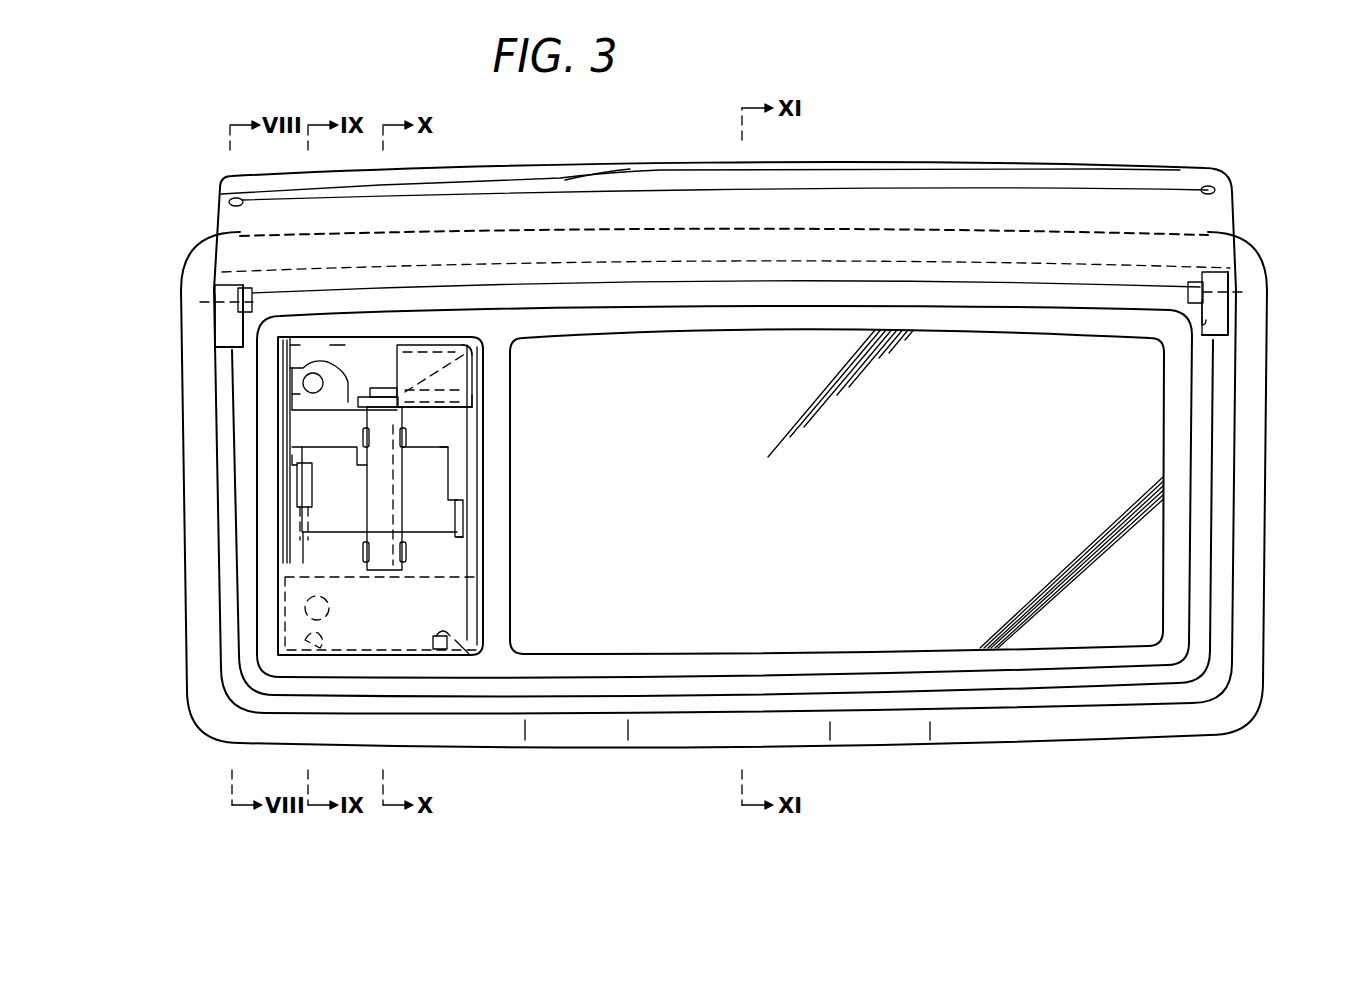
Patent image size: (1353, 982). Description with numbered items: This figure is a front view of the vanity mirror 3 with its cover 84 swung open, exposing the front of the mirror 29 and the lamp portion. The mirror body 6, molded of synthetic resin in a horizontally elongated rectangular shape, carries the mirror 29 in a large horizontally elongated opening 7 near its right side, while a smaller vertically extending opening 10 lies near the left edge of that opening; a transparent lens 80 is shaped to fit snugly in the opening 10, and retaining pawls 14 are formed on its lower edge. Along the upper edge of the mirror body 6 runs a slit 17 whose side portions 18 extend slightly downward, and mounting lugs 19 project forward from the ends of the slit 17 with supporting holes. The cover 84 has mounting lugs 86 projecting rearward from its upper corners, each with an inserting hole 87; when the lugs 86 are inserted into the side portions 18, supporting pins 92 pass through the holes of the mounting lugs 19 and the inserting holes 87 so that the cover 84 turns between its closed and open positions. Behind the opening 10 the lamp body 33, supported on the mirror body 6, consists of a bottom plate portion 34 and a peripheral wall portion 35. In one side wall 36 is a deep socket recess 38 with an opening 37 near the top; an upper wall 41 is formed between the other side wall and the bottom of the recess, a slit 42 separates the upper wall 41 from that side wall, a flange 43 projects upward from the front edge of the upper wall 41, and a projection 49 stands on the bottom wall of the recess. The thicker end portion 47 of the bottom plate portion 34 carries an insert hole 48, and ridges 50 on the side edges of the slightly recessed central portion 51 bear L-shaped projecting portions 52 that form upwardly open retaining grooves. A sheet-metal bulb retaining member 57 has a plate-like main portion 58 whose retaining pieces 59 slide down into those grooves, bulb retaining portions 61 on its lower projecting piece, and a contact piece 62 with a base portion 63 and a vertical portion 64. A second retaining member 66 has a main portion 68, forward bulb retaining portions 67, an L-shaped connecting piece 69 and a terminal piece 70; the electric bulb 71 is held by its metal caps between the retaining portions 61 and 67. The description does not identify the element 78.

The vanity mirror 3 is at (1104, 126).
The mirror body 6 is at (1266, 495).
The opening 7 is at (1157, 566).
The opening 10 is at (483, 470).
The retaining pawl 14 is at (462, 640).
The slit 17 is at (652, 265).
The side portion 18 is at (1203, 330).
The mounting lug 19 is at (1200, 283).
The mirror 29 is at (702, 630).
The lamp body 33 is at (567, 369).
The bottom plate portion 34 is at (450, 447).
The peripheral wall portion 35 is at (475, 590).
The side wall 36 is at (328, 545).
The opening 37 is at (470, 400).
The socket recess 38 is at (478, 337).
The upper wall 41 is at (296, 408).
The slit 42 is at (297, 358).
The flange 43 is at (340, 338).
The upper end portion 47 is at (352, 447).
The insert hole 48 is at (303, 390).
The projection 49 is at (327, 489).
The ridge 50 is at (297, 500).
The central portion 51 is at (463, 560).
The L-shaped projecting portion 52 is at (300, 518).
The bulb retaining member 57 is at (353, 530).
The main portion 58 is at (365, 555).
The retaining piece 59 is at (292, 533).
The bulb retaining portion 61 is at (375, 565).
The contact piece 62 is at (292, 458).
The base portion 63 is at (300, 476).
The vertical portion 64 is at (288, 368).
The bulb retaining member 66 is at (407, 440).
The bulb retaining portion 67 is at (395, 440).
The main portion 68 is at (402, 397).
The connecting piece 69 is at (378, 388).
The terminal piece 70 is at (470, 385).
The electric bulb 71 is at (405, 530).
The motor housing 78 is at (475, 340).
The lens 80 is at (322, 560).
The cover 84 is at (905, 163).
The mounting lug 86 is at (215, 328).
The inserting hole 87 is at (222, 280).
The supporting pin 92 is at (234, 290).